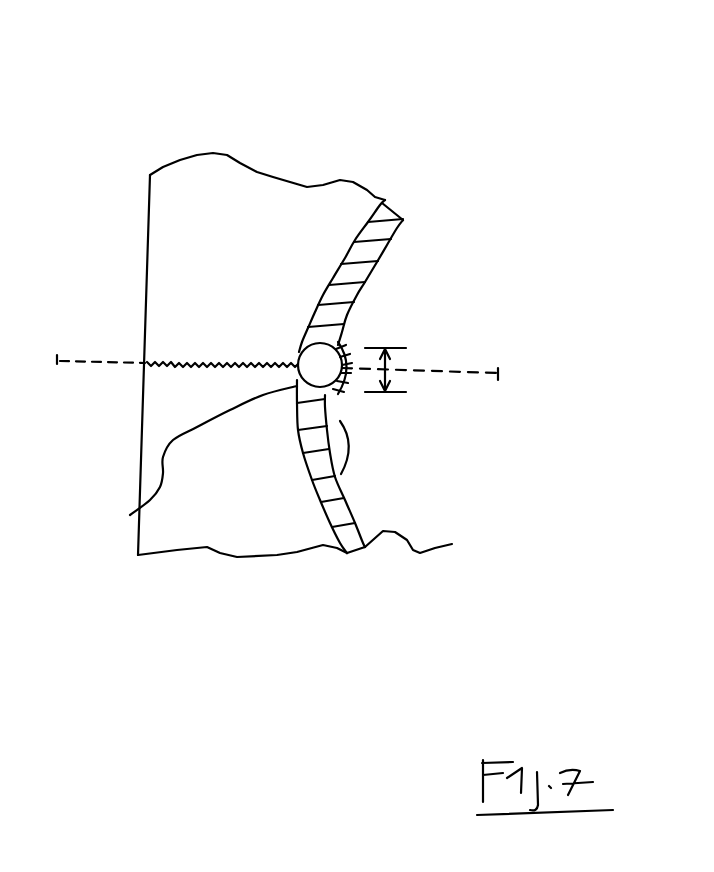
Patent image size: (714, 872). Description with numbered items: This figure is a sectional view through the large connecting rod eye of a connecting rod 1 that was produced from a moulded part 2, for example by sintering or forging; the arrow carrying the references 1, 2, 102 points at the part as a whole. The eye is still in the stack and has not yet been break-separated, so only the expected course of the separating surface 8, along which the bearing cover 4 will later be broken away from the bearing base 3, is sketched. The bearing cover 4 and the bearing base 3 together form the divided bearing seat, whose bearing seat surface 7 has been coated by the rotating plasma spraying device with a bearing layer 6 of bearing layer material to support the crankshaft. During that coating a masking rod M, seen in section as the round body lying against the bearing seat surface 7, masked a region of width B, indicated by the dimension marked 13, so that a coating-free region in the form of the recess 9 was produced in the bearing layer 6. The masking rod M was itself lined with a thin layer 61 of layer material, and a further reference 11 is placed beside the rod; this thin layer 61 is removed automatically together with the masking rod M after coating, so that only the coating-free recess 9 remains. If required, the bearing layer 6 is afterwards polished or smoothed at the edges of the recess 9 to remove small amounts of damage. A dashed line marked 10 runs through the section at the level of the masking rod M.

The connecting rod 1 is at (451, 21).
The moulded part 2 is at (326, 378).
The coupling arrangement 102 is at (326, 378).
The bearing base 3 is at (283, 205).
The bearing cover 4 is at (192, 526).
The bearing layer 6 is at (477, 552).
The bearing seat surface 7 is at (322, 488).
The separating surface 8 is at (543, 215).
The recess 9 is at (130, 515).
The center line 10 is at (92, 362).
The ball seat 11 is at (337, 347).
The diameter 13 is at (405, 392).
The thin layer 61 is at (333, 400).